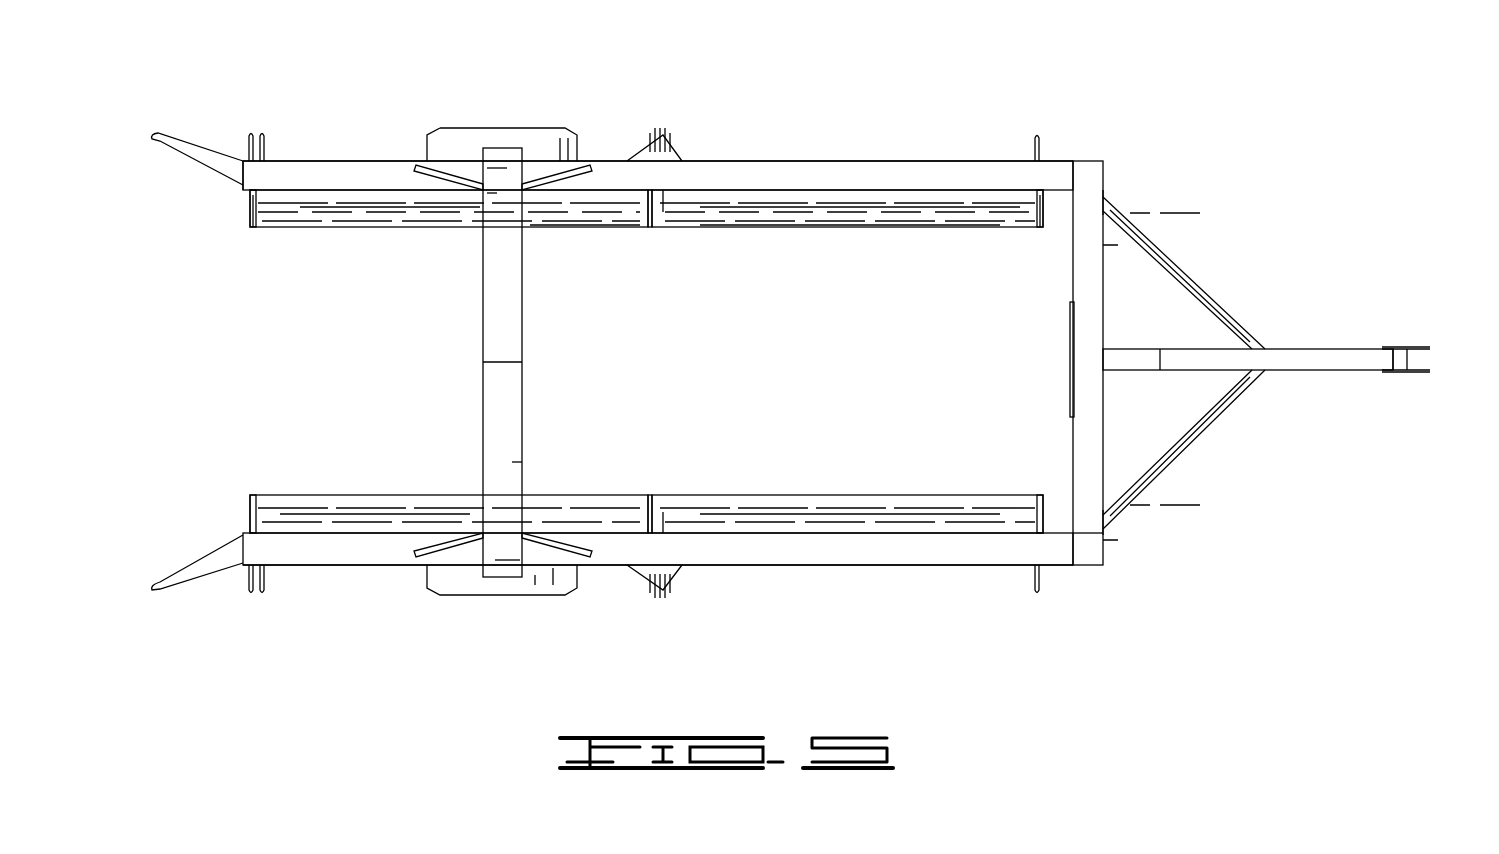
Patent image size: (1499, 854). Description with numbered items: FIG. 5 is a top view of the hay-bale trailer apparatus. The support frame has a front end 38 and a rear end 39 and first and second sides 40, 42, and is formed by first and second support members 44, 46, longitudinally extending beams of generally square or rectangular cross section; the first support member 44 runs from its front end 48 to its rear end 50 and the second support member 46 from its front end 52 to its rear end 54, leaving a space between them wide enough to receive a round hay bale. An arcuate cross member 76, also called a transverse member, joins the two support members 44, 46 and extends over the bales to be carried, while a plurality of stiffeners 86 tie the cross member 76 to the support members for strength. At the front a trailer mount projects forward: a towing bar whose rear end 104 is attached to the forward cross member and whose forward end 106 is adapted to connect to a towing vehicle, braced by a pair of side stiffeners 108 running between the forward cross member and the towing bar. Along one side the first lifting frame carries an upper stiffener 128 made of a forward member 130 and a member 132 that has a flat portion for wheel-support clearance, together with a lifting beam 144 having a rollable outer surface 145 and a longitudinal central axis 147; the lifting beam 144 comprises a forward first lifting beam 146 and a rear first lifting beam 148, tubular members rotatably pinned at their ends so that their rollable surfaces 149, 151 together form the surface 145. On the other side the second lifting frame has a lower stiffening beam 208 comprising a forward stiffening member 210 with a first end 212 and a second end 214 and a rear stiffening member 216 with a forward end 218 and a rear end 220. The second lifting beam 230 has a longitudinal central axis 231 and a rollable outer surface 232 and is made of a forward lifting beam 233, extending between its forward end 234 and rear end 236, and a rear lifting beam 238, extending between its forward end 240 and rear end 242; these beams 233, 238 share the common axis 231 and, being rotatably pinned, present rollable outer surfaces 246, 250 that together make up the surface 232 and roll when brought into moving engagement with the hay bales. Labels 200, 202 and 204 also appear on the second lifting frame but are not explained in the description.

The front end 38 is at (1108, 247).
The rear end 39 is at (243, 182).
The first side 40 is at (658, 583).
The second side 42 is at (658, 109).
The first support member 44 is at (735, 553).
The second support member 46 is at (733, 175).
The front end 48 is at (1075, 553).
The rear end 50 is at (242, 548).
The front end 52 is at (1122, 372).
The rear end 54 is at (232, 160).
The cross member 76 is at (507, 405).
The stiffeners 86 is at (452, 178).
The rear end 104 is at (1105, 360).
The forward end 106 is at (1390, 360).
The side stiffeners 108 is at (1217, 303).
The upper stiffener 128 is at (641, 578).
The forward member 130 is at (915, 540).
The member 132 is at (385, 537).
The lifting beam 144 is at (575, 467).
The rollable outer surface 145 is at (646, 464).
The forward first lifting beam 146 is at (880, 495).
The longitudinal central axis 147 is at (1173, 507).
The rear first lifting beam 148 is at (293, 495).
The rollable outer surface 149 is at (678, 495).
The rollable outer surface 151 is at (415, 495).
The upper roller assembly 200 is at (646, 146).
The upper roller assembly rear section 202 is at (803, 192).
The upper roller assembly front section 204 is at (393, 192).
The lower stiffening beam 208 is at (646, 202).
The forward stiffening member 210 is at (968, 205).
The first end 212 is at (1015, 190).
The second end 214 is at (672, 158).
The rear stiffening member 216 is at (300, 205).
The forward end 218 is at (648, 140).
The rear end 220 is at (276, 190).
The second lifting beam 230 is at (660, 287).
The longitudinal central axis 231 is at (1175, 213).
The rollable outer surface 232 is at (765, 268).
The forward lifting beam 233 is at (910, 217).
The forward end 234 is at (1028, 230).
The rear end 236 is at (650, 210).
The rear lifting beam 238 is at (340, 205).
The forward end 240 is at (645, 218).
The rear end 242 is at (260, 227).
The rollable outer surface 246 is at (775, 218).
The rollable outer surface 250 is at (575, 228).